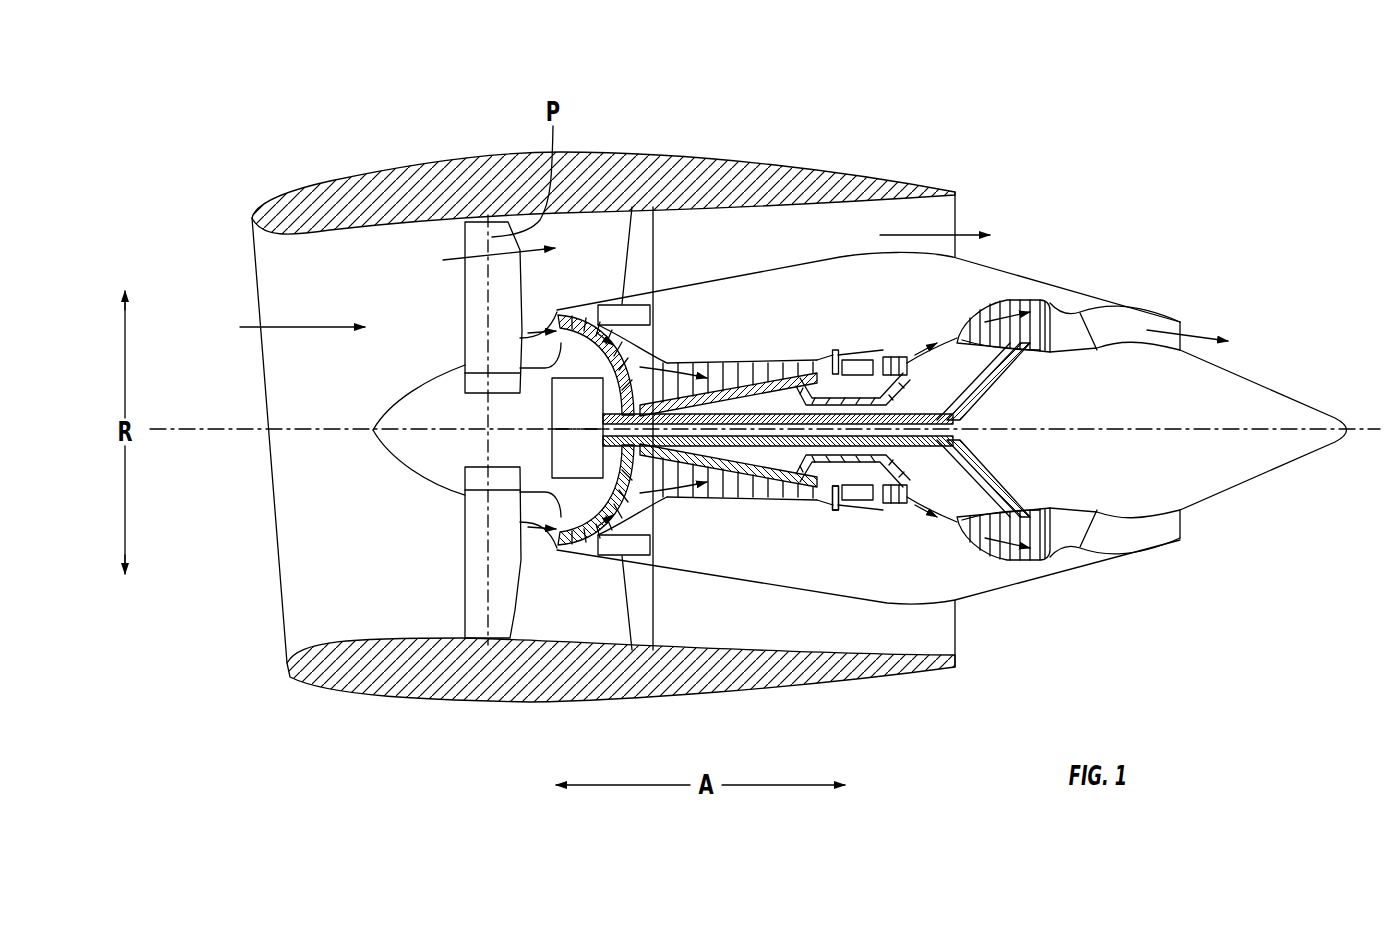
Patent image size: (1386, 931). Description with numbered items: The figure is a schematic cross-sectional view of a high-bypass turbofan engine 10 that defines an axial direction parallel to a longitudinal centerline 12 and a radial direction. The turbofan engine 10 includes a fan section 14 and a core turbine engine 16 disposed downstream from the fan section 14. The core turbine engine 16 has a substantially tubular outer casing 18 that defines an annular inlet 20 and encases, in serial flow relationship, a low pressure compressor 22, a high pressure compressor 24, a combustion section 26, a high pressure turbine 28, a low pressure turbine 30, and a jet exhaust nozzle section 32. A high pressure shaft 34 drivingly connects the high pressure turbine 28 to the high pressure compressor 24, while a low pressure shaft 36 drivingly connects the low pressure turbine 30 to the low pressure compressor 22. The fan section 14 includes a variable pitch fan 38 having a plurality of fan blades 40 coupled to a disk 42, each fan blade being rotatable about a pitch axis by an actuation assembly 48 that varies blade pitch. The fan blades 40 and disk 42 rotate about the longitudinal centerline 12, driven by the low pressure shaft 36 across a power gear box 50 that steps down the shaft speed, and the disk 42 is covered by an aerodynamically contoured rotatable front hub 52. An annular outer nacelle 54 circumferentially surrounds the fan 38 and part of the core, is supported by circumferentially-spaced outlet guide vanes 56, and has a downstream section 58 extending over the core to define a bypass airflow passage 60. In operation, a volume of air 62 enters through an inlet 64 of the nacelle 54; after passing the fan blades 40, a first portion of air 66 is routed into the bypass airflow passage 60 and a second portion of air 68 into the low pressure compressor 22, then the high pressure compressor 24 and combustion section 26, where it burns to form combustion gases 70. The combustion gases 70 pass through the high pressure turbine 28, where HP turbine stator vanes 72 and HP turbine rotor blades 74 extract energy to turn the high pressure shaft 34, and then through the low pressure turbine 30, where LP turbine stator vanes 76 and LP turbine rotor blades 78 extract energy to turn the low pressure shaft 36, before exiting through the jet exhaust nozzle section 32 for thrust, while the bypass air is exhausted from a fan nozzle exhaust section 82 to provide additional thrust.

The turbofan engine 10 is at (1096, 175).
The longitudinal centerline 12 is at (1123, 420).
The fan section 14 is at (512, 128).
The core turbine engine 16 is at (822, 326).
The outer casing 18 is at (810, 593).
The annular inlet 20 is at (560, 547).
The low pressure compressor 22 is at (603, 488).
The high pressure compressor 24 is at (683, 490).
The combustion section 26 is at (853, 500).
The high pressure turbine 28 is at (1013, 487).
The low pressure turbine 30 is at (1038, 553).
The jet exhaust nozzle section 32 is at (1098, 540).
The high pressure shaft 34 is at (860, 392).
The low pressure shaft 36 is at (997, 388).
The variable pitch fan 38 is at (430, 463).
The fan blades 40 is at (460, 578).
The disk 42 is at (487, 383).
The actuation assembly 48 is at (645, 300).
The power gear box 50 is at (652, 364).
The front hub 52 is at (390, 443).
The outer nacelle 54 is at (510, 702).
The outlet guide vanes 56 is at (657, 238).
The downstream section 58 is at (880, 188).
The bypass airflow passage 60 is at (887, 232).
The volume of air 62 is at (302, 325).
The inlet 64 is at (283, 648).
The first portion of air 66 is at (480, 253).
The second portion of air 68 is at (547, 320).
The combustion gases 70 is at (905, 355).
The HP turbine stator vanes 72 is at (868, 497).
The HP turbine rotor blades 74 is at (893, 483).
The LP turbine stator vanes 76 is at (962, 540).
The LP turbine rotor blades 78 is at (975, 550).
The fan nozzle exhaust section 82 is at (944, 218).